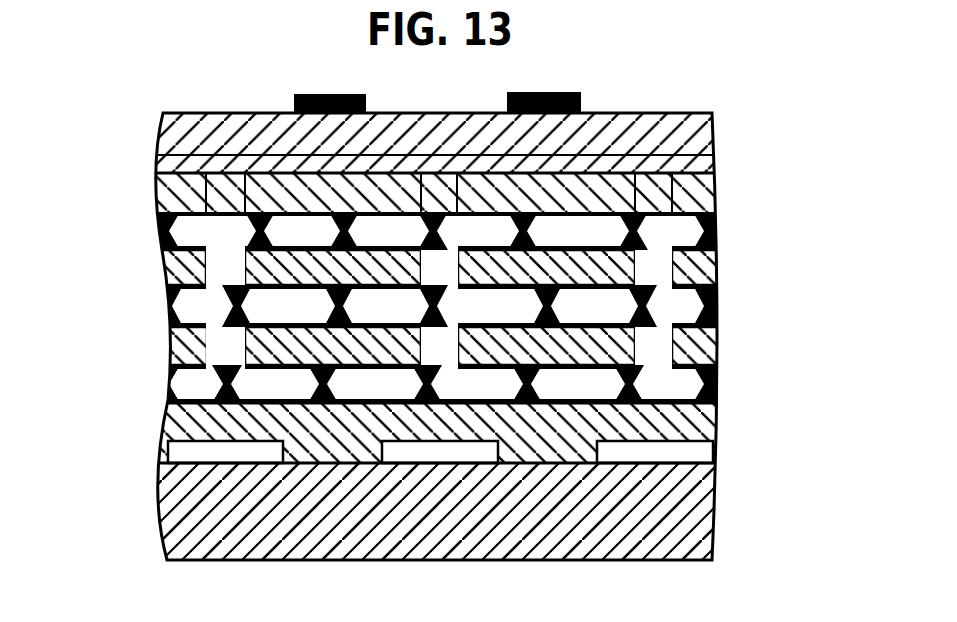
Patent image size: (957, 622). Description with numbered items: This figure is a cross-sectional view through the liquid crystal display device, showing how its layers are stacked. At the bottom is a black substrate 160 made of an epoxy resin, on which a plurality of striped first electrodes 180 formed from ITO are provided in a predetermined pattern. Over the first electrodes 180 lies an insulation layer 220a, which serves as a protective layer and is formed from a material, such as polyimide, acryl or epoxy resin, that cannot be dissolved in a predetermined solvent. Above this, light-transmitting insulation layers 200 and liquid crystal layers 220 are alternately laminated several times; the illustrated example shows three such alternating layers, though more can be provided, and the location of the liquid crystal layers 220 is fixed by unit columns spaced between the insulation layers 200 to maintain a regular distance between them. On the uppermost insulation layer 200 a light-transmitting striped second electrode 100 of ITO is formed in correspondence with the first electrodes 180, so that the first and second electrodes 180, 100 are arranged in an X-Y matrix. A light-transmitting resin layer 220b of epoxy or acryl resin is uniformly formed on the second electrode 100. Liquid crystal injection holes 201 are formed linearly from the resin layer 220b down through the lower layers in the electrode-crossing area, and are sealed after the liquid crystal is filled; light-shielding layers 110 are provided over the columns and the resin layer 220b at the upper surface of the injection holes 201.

The light-shielding layer 110 is at (293, 106).
The light-transmitting resin layer 220b is at (714, 143).
The second electrode 100 is at (716, 160).
The insulation layer 200 is at (716, 195).
The liquid crystal injection hole 201 is at (207, 197).
The liquid crystal layer 220 is at (212, 238).
The insulation layer 220a is at (716, 428).
The first electrode 180 is at (235, 455).
The black substrate 160 is at (720, 495).